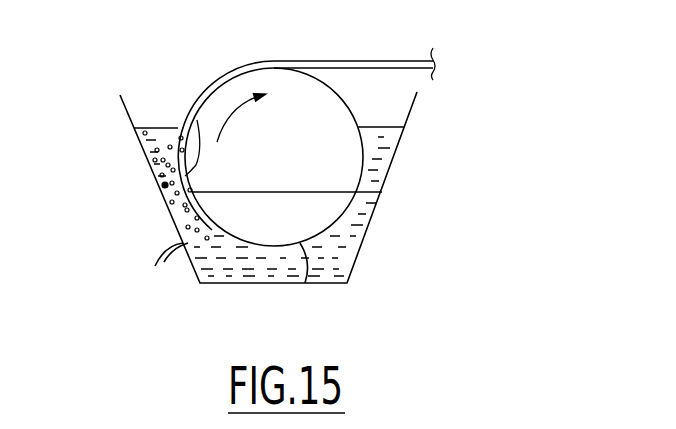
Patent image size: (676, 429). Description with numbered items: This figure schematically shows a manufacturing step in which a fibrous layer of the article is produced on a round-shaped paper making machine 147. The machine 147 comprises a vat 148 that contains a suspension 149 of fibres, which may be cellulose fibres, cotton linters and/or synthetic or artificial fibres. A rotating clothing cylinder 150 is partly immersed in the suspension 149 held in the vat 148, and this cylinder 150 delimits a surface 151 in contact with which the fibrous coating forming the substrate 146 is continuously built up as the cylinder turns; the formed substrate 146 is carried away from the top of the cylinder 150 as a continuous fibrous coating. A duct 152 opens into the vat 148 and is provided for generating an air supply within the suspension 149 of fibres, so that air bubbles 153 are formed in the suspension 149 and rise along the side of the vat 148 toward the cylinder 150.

The substrate 146 is at (200, 92).
The round-shaped paper making machine 147 is at (428, 135).
The vat 148 is at (333, 283).
The suspension of fibres 149 is at (382, 192).
The rotating clothing cylinder 150 is at (303, 284).
The surface 151 is at (183, 170).
The duct 152 is at (176, 262).
The air bubbles 153 is at (180, 177).